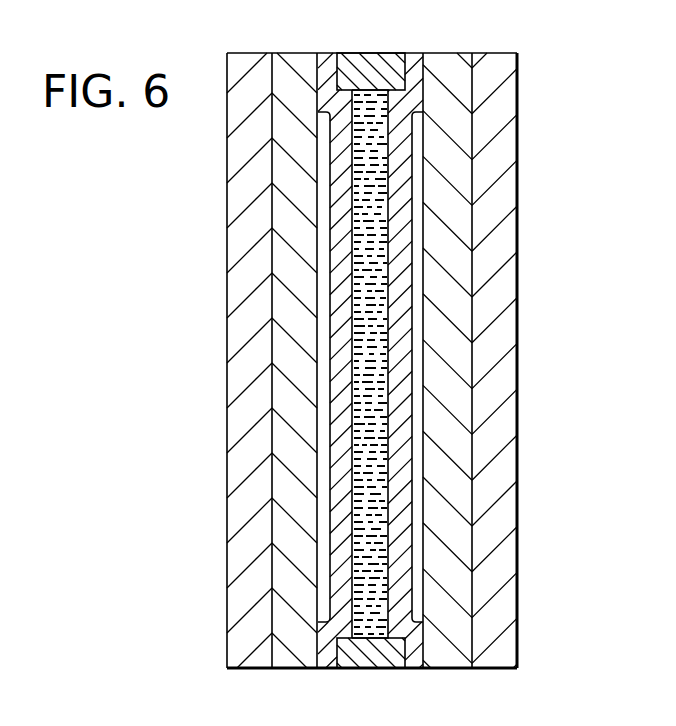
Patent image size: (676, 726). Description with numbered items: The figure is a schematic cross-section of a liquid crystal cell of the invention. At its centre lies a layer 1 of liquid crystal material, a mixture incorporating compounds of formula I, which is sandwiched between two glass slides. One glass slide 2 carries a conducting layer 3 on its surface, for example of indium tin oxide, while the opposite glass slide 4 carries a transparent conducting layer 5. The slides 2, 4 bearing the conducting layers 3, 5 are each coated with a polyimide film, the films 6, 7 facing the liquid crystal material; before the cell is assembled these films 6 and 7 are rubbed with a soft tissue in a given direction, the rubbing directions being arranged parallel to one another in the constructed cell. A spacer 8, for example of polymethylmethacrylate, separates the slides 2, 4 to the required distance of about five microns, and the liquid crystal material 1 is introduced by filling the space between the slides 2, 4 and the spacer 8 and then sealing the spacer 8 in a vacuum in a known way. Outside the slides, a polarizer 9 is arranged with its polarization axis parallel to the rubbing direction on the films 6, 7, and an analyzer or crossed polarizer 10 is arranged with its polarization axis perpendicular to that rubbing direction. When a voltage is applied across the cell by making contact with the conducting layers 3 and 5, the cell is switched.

The layer of liquid crystal material 1 is at (377, 100).
The glass slide 2 is at (297, 62).
The conducting layer 3 is at (322, 523).
The glass slide 4 is at (467, 62).
The transparent conducting layer 5 is at (420, 302).
The polyimide film 6 is at (333, 410).
The polyimide film 7 is at (402, 400).
The spacer 8 is at (362, 63).
The polarizer 9 is at (243, 251).
The analyzer 10 is at (505, 103).